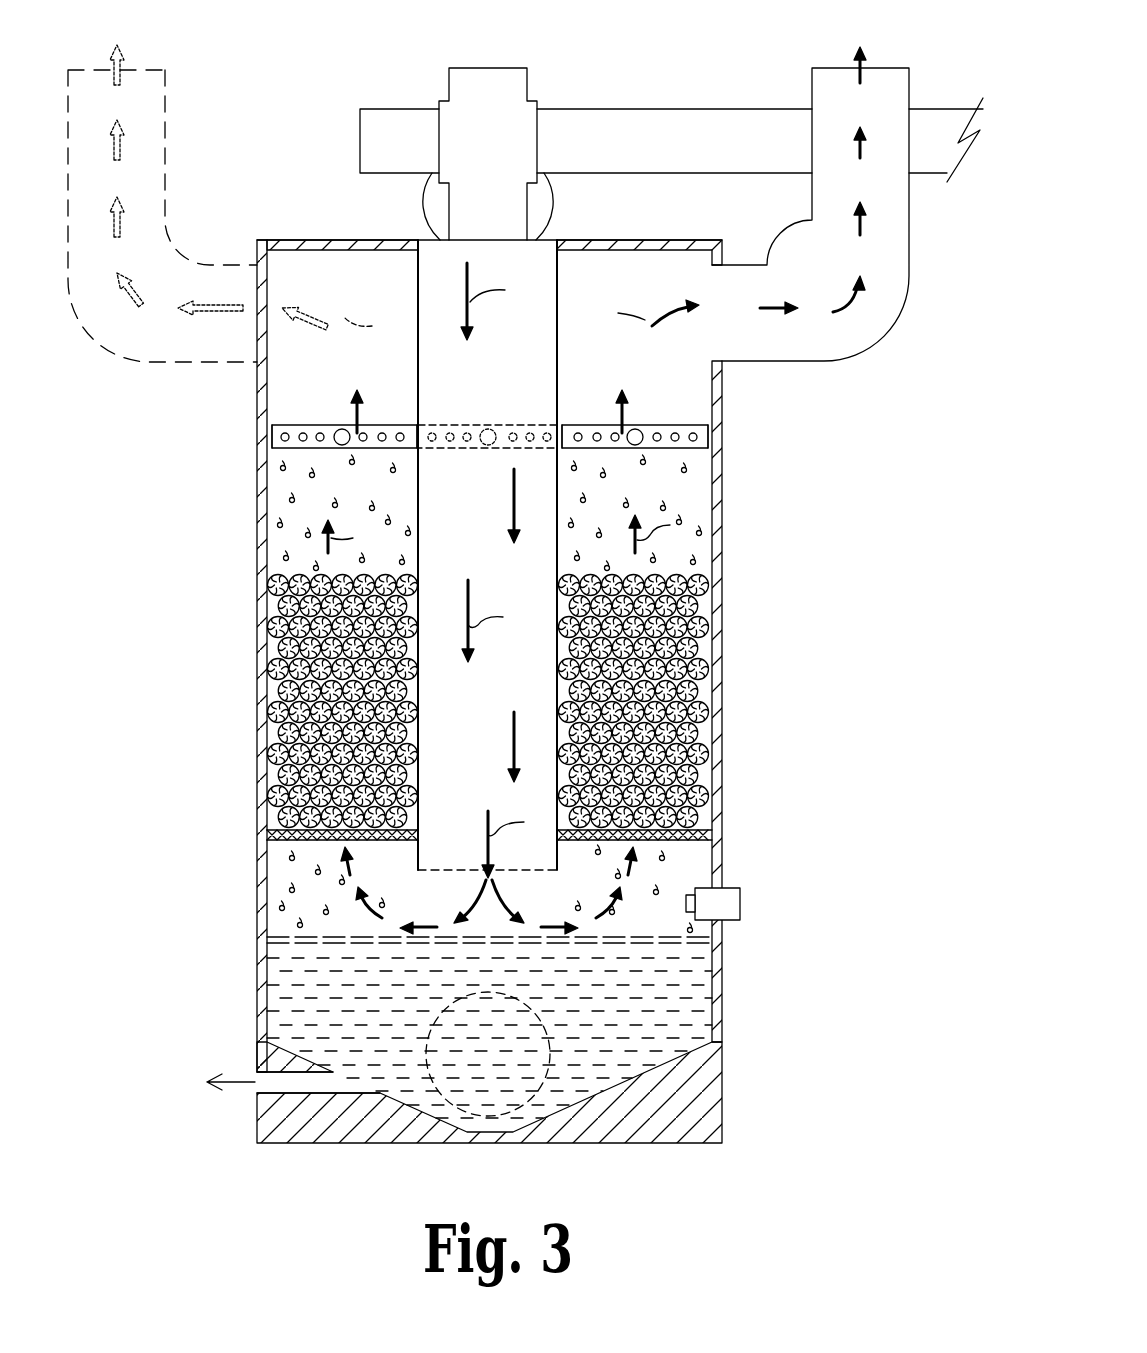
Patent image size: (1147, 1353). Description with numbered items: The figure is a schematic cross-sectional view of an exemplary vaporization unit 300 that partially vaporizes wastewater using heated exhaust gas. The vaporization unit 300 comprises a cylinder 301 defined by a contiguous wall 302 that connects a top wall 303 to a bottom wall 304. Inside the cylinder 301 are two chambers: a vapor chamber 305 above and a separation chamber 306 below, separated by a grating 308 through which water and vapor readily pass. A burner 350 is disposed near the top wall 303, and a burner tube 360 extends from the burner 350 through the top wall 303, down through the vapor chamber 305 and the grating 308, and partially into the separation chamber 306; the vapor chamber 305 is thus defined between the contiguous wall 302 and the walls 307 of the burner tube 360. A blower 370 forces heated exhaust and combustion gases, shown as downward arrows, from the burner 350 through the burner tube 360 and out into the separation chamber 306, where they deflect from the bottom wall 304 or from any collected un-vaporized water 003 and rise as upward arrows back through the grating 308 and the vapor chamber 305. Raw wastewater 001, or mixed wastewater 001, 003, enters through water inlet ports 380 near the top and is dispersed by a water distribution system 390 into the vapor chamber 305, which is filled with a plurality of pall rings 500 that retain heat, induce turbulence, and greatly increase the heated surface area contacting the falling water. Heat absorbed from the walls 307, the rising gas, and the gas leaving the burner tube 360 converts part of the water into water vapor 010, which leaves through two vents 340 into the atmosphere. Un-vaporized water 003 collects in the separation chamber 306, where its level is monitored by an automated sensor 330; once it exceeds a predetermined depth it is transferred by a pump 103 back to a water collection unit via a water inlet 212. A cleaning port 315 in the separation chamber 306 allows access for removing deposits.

The water vapor 010 is at (120, 54).
The vaporization unit 300 is at (493, 649).
The vent 340 is at (910, 262).
The blower 370 is at (527, 80).
The burner 350 is at (553, 212).
The top wall 303 is at (655, 240).
The wall of burner tube 307 is at (418, 308).
The vapor chamber 305 is at (357, 377).
The burner tube 360 is at (508, 377).
The water inlet port 380 is at (340, 430).
The water distribution system 390 is at (272, 440).
The cylinder 301 is at (257, 545).
The contiguous wall 302 is at (722, 545).
The pall ring 500 is at (267, 668).
The grating 308 is at (287, 838).
The separation chamber 306 is at (303, 882).
The automated sensor 330 is at (740, 905).
The cleaning port 315 is at (548, 1018).
The pump 103 is at (242, 1068).
The raw wastewater 001 is at (672, 1028).
The un-vaporized water 003 is at (489, 1038).
The bottom wall 304 is at (622, 1143).
The water inlet 212 is at (181, 1100).